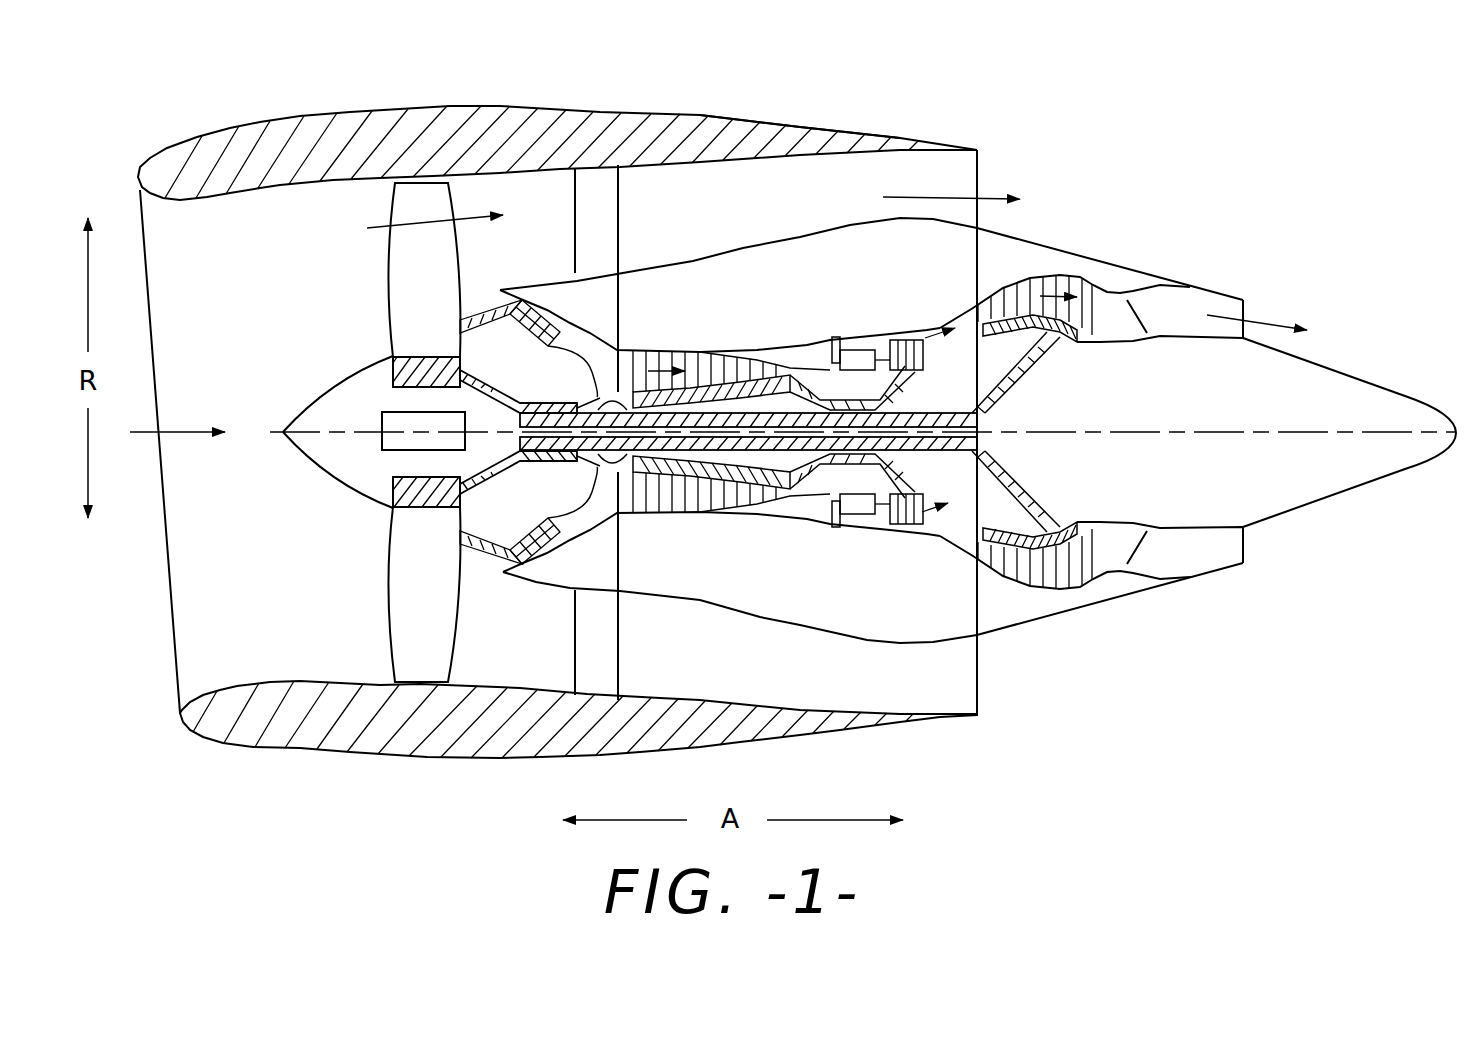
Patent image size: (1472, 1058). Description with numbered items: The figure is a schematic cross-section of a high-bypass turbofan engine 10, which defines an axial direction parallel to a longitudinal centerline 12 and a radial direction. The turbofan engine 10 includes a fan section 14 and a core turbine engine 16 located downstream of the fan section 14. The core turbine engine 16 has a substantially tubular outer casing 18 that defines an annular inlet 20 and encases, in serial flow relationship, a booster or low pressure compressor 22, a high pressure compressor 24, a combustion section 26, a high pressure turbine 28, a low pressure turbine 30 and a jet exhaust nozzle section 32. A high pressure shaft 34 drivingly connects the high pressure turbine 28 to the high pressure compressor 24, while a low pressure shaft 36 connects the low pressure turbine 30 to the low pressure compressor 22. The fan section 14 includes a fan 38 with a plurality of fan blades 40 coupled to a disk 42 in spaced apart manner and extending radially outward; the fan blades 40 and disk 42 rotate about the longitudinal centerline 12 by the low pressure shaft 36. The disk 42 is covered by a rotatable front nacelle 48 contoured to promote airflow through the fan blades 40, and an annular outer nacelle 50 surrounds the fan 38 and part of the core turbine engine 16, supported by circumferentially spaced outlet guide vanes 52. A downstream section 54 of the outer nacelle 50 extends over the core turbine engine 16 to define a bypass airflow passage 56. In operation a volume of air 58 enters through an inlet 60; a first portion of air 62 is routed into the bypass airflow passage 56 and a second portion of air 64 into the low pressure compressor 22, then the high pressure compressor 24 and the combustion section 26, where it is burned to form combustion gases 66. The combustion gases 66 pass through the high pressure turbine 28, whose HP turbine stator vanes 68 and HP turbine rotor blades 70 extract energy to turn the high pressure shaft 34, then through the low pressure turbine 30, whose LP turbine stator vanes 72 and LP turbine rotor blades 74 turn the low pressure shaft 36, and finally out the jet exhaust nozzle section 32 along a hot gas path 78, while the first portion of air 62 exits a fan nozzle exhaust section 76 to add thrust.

The turbofan engine 10 is at (1235, 178).
The longitudinal centerline 12 is at (1157, 430).
The fan section 14 is at (473, 88).
The core turbine engine 16 is at (793, 299).
The outer casing 18 is at (820, 627).
The annular inlet 20 is at (513, 558).
The low pressure compressor 22 is at (578, 529).
The high pressure compressor 24 is at (650, 510).
The combustion section 26 is at (853, 507).
The high pressure turbine 28 is at (943, 512).
The low pressure turbine 30 is at (1077, 587).
The jet exhaust nozzle section 32 is at (1250, 313).
The high pressure shaft 34 is at (900, 377).
The low pressure shaft 36 is at (570, 407).
The fan 38 is at (377, 272).
The fan blades 40 is at (388, 622).
The disk 42 is at (390, 360).
The front nacelle 48 is at (310, 403).
The outer nacelle 50 is at (460, 757).
The outlet guide vanes 52 is at (617, 190).
The downstream section 54 is at (785, 114).
The bypass airflow passage 56 is at (770, 212).
The volume of air 58 is at (173, 410).
The inlet 60 is at (176, 665).
The first portion of air 62 is at (407, 223).
The second portion of air 64 is at (481, 300).
The combustion gases 66 is at (1030, 290).
The HP turbine stator vanes 68 is at (897, 510).
The HP turbine rotor blades 70 is at (910, 513).
The LP turbine stator vanes 72 is at (983, 560).
The LP turbine rotor blades 74 is at (997, 567).
The fan nozzle exhaust section 76 is at (982, 176).
The hot gas path 78 is at (967, 312).